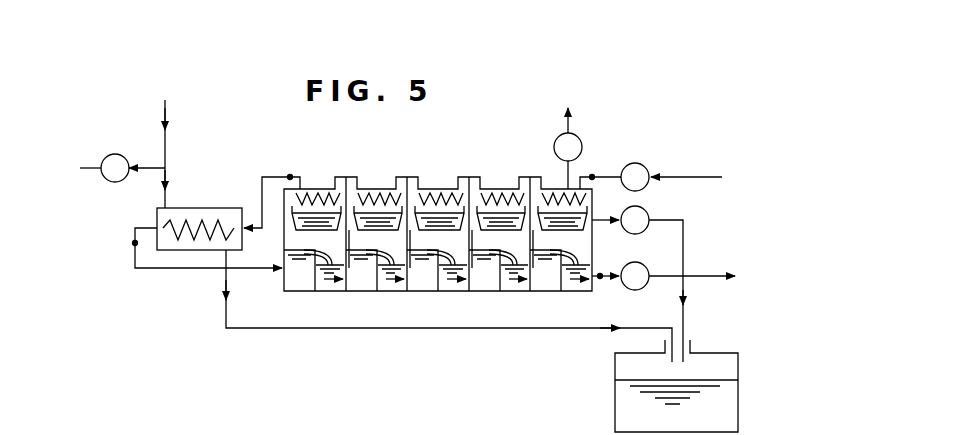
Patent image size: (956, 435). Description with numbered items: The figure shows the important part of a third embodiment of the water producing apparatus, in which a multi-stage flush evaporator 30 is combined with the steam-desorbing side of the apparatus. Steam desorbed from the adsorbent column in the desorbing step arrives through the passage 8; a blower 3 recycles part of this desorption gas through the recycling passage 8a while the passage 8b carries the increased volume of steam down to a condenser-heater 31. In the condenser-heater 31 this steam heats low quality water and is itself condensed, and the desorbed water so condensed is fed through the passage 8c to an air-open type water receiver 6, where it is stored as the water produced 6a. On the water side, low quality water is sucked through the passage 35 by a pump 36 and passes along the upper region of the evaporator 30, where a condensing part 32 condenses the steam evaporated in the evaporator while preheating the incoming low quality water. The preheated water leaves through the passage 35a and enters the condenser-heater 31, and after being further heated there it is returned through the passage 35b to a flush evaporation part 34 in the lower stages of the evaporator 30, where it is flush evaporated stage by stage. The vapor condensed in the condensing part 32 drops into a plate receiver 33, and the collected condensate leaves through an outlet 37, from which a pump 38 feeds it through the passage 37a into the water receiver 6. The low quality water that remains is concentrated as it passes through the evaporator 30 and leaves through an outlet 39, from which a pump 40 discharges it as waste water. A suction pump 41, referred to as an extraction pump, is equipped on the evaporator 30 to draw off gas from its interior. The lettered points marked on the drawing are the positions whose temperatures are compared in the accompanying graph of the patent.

The blower 3 is at (117, 154).
The passage for feeding desorbed steam 8 is at (166, 140).
The recycling passage 8a is at (151, 165).
The steam feeding passage 8b is at (168, 175).
The condensed water discharge passage 8c is at (258, 330).
The condenser-heater 31 is at (216, 208).
The passage for feeding heated low quality water to condenser-heater 35a is at (262, 176).
The passage for feeding heated low quality water to flush evaporating part 35b is at (165, 268).
The multi-stage flush evaporator 30 is at (438, 189).
The condensing part 32 is at (384, 190).
The plate receiver 33 is at (371, 278).
The flush evaporation part 34 is at (305, 280).
The suction pump 41 is at (580, 141).
The pump for feeding low quality water 36 is at (639, 163).
The passage for sucking low quality water 35 is at (700, 177).
The outlet of condensed water 37 is at (600, 220).
The pump for feeding condensed water 38 is at (652, 205).
The passage to water receiver 37a is at (686, 231).
The outlet of concentrated low quality water 39 is at (598, 275).
The pump for discharging waste water 40 is at (646, 270).
The water receiver 6 is at (740, 358).
The water produced 6a is at (722, 400).